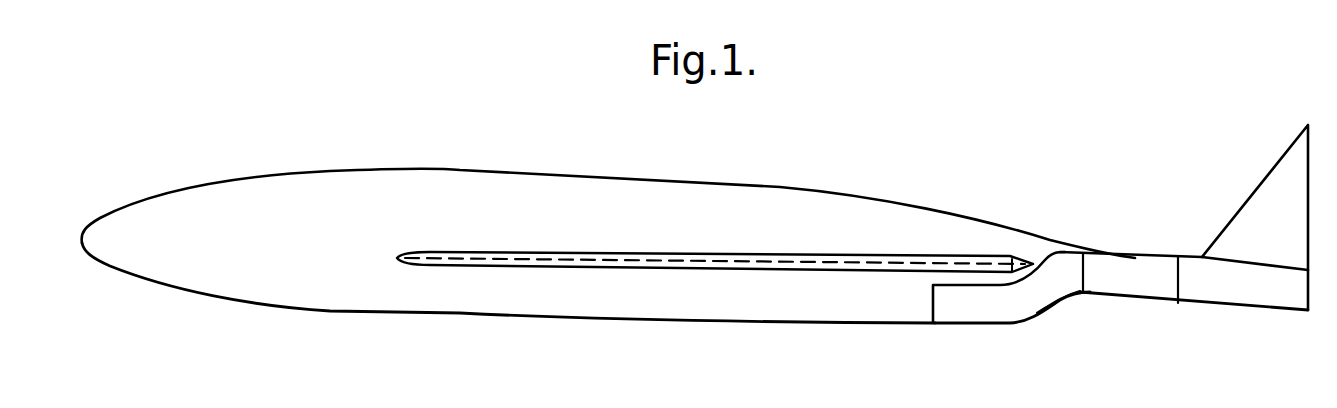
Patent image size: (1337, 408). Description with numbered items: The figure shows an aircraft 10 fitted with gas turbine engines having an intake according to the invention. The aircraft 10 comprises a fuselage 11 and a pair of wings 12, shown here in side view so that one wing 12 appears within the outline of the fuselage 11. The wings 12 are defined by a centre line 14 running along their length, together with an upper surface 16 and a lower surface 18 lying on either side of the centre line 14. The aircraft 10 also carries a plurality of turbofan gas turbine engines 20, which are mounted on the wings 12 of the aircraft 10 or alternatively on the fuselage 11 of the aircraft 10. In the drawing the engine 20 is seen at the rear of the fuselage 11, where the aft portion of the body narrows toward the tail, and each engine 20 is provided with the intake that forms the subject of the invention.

The aircraft 10 is at (695, 240).
The fuselage 11 is at (456, 187).
The wings 12 is at (598, 263).
The centre line 14 is at (788, 255).
The upper surface 16 is at (702, 251).
The lower surface 18 is at (713, 268).
The turbofan gas turbine engines 20 is at (1117, 277).